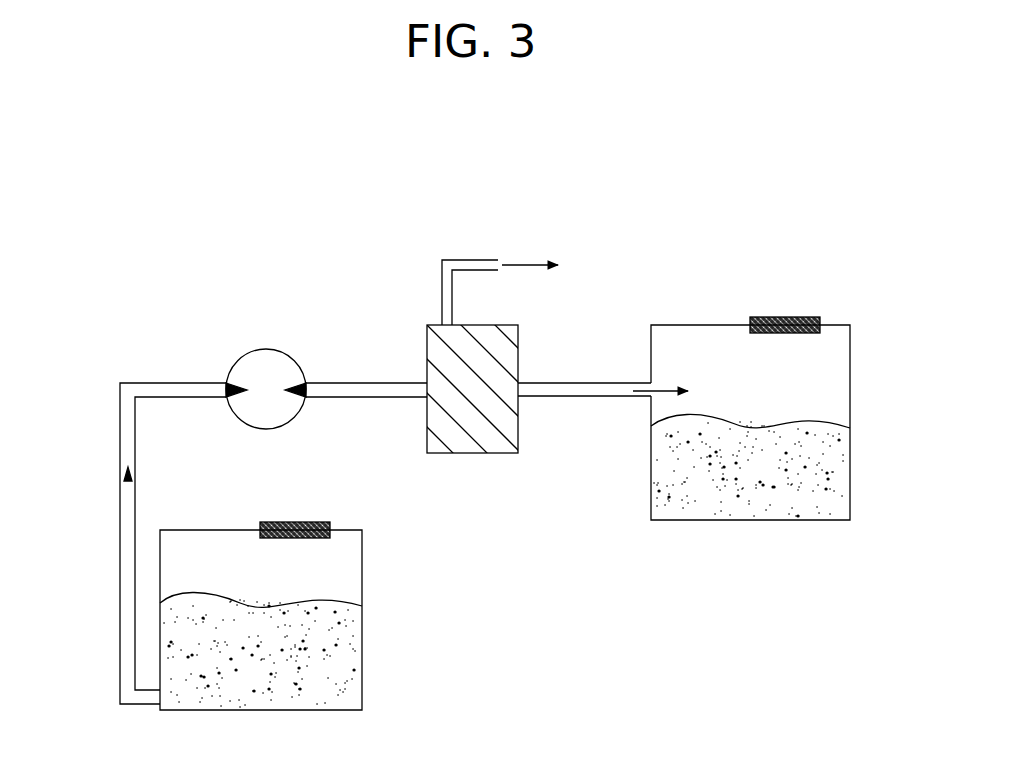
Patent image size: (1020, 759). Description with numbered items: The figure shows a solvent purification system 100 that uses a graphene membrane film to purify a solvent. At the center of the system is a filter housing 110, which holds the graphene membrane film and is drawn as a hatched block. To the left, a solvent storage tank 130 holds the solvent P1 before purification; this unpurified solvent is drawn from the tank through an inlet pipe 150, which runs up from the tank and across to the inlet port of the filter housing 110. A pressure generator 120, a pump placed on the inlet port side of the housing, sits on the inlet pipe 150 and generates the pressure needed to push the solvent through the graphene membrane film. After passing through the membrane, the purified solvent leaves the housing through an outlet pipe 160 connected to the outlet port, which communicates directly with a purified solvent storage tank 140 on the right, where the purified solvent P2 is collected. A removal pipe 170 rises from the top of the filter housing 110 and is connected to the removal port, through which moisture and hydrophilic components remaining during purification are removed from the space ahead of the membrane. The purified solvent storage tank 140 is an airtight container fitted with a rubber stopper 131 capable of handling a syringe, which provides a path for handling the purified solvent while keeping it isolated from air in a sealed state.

The solvent purification system 100 is at (680, 212).
The filter housing 110 is at (481, 453).
The pressure generator 120 is at (272, 350).
The solvent storage tank 130 is at (299, 616).
The rubber stopper 131 is at (790, 316).
The purified solvent storage tank 140 is at (750, 427).
The inlet pipe 150 is at (120, 452).
The outlet pipe 160 is at (610, 397).
The removal pipe 170 is at (442, 285).
The solvent before purification P1 is at (336, 655).
The purified solvent P2 is at (793, 498).